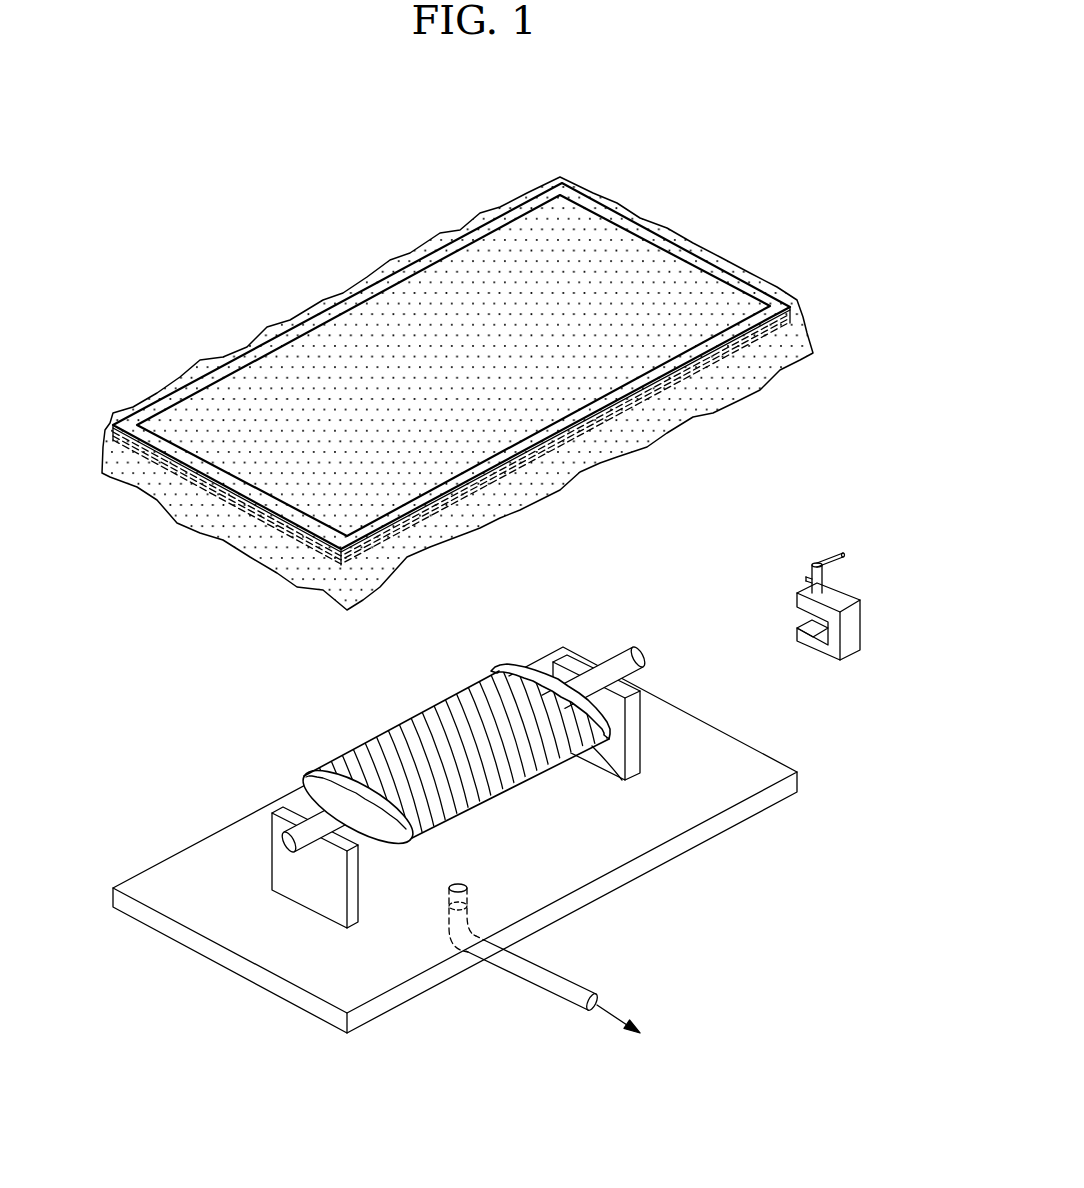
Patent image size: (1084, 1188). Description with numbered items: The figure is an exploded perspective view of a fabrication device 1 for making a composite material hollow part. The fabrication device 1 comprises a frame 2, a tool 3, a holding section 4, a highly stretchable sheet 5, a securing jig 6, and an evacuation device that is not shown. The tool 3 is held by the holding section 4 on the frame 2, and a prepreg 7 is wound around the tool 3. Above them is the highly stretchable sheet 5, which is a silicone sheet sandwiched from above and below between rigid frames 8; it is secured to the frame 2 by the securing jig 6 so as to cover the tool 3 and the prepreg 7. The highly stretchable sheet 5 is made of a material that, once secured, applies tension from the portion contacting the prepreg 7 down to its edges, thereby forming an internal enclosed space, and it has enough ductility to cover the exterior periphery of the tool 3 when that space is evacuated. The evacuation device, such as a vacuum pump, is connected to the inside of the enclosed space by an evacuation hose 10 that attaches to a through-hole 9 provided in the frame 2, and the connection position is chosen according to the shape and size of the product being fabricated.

The fabrication device 1 is at (211, 197).
The frame 2 is at (182, 935).
The tool 3 is at (463, 775).
The holding section 4 is at (280, 872).
The highly stretchable sheet 5 is at (680, 272).
The securing jig 6 is at (848, 632).
The prepreg 7 is at (415, 718).
The rigid frames 8 is at (772, 305).
The through-hole 9 is at (455, 883).
The evacuation hose 10 is at (567, 987).